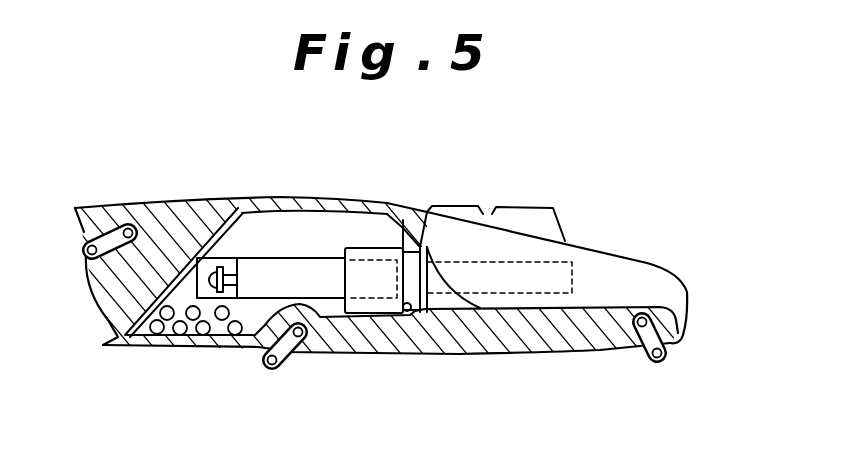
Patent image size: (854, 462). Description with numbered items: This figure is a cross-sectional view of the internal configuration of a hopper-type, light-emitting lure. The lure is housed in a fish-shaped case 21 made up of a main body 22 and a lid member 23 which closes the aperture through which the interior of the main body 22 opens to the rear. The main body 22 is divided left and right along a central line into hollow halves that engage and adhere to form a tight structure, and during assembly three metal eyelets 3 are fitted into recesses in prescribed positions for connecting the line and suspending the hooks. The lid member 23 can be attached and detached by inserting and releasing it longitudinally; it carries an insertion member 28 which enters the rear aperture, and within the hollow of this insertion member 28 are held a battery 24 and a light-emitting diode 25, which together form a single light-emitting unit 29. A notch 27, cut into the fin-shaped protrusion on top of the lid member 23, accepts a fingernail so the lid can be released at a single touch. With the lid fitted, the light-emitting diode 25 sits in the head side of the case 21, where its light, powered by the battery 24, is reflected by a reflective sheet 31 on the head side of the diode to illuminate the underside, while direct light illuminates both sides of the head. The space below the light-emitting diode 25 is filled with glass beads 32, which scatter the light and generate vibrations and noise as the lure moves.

The metal eyelet 3 is at (90, 262).
The fish-shaped case 21 is at (415, 197).
The main body 22 is at (173, 207).
The lid member 23 is at (613, 262).
The battery 24 is at (532, 262).
The light-emitting diode 25 is at (208, 210).
The notch 27 is at (487, 207).
The insertion member 28 is at (370, 248).
The light-emitting unit 29 is at (322, 247).
The reflective sheet 31 is at (173, 320).
The glass beads 32 is at (186, 332).